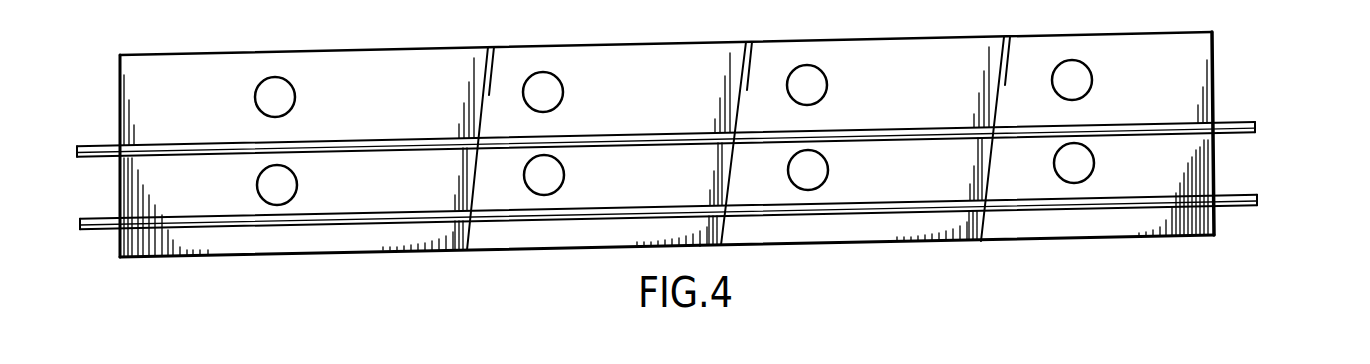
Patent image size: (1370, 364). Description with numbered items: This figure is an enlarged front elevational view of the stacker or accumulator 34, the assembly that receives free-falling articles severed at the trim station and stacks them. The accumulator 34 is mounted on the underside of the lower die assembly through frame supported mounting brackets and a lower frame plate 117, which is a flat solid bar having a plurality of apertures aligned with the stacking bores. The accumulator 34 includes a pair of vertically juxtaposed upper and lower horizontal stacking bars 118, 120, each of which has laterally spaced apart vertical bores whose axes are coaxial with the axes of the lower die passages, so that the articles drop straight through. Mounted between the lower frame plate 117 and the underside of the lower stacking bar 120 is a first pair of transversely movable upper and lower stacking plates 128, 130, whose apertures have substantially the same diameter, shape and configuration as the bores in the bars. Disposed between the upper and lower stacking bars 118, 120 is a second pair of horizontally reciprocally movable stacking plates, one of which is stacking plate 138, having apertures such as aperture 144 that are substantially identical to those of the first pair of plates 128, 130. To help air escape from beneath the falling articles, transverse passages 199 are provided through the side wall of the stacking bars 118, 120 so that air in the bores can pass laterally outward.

The stacker or accumulator 34 is at (112, 258).
The lower frame plate 117 is at (320, 252).
The upper horizontal stacking bar 118 is at (1214, 59).
The lower horizontal stacking bar 120 is at (1217, 163).
The upper stacking plate 128 is at (1242, 193).
The lower stacking plate 130 is at (1230, 208).
The stacking plate of second pair 138 is at (1237, 112).
The aperture 144 is at (1252, 137).
The transverse passages 199 is at (295, 94).